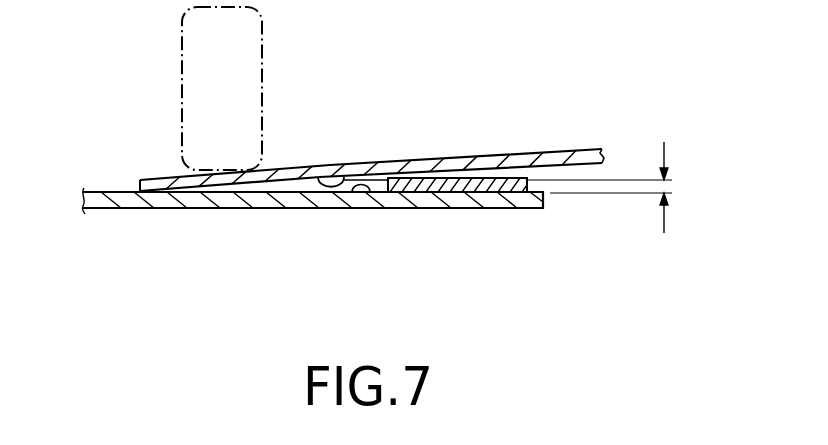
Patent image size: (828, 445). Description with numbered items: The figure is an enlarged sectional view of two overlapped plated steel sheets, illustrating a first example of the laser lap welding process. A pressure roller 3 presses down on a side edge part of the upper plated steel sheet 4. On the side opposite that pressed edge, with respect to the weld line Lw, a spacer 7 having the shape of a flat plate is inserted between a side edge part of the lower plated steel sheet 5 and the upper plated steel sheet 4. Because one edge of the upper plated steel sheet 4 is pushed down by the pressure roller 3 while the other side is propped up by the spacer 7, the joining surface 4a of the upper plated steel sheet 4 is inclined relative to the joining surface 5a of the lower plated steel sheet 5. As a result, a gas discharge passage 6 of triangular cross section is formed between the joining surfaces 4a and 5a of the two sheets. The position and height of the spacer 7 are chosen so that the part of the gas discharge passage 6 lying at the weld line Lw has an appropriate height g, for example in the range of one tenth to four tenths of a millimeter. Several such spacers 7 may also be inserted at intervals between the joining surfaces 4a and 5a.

The pressure roller 3 is at (182, 61).
The upper plated steel sheet 4 is at (556, 151).
The joining surface of the upper plated steel sheet 4a is at (352, 179).
The lower plated steel sheet 5 is at (531, 207).
The joining surface of the lower plated steel sheet 5a is at (367, 208).
The gas discharge passage 6 is at (299, 190).
The spacer 7 is at (470, 186).
The weld line Lw is at (328, 164).
The height of the gas discharge passage g is at (613, 187).